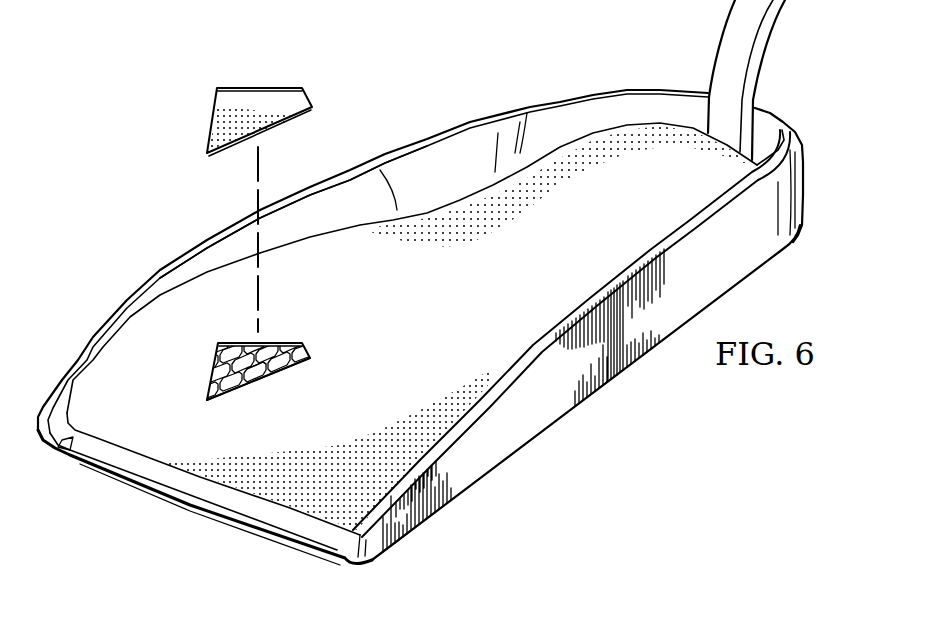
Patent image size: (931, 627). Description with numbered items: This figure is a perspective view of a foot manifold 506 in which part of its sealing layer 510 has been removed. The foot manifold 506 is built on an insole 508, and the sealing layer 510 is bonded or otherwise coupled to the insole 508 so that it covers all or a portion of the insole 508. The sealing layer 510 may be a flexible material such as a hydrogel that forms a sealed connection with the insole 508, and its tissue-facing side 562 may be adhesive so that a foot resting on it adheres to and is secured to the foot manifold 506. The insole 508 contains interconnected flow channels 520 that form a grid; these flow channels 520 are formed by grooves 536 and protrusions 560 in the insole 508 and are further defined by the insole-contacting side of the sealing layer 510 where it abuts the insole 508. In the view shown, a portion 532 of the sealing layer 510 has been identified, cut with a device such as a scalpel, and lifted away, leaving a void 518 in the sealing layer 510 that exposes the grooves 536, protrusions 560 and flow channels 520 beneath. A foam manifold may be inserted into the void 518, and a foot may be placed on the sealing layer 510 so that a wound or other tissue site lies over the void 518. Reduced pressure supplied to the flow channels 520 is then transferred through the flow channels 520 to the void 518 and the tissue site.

The foot manifold 506 is at (420, 282).
The insole 508 is at (524, 433).
The sealing layer 510 is at (212, 286).
The void 518 is at (232, 362).
The flow channels 520 is at (273, 353).
The portion 532 is at (258, 100).
The grooves 536 is at (223, 362).
The protrusions 560 is at (265, 370).
The tissue-facing side 562 is at (152, 338).